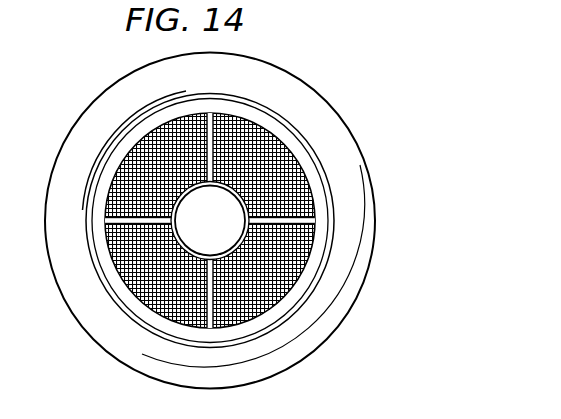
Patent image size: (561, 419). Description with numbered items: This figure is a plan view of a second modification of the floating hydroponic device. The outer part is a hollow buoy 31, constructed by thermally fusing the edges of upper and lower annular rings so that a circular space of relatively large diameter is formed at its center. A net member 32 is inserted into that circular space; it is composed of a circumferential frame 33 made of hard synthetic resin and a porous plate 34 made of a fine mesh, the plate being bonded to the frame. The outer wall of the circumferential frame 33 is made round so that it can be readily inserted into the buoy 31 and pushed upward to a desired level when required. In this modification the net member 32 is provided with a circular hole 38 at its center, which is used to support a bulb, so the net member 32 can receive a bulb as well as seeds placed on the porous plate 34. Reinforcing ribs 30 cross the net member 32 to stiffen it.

The reinforcing ribs 30 is at (312, 238).
The hollow buoy 31 is at (331, 128).
The net member 32 is at (302, 172).
The circumferential frame 33 is at (317, 191).
The porous plate 34 is at (304, 224).
The circular hole 38 is at (237, 233).